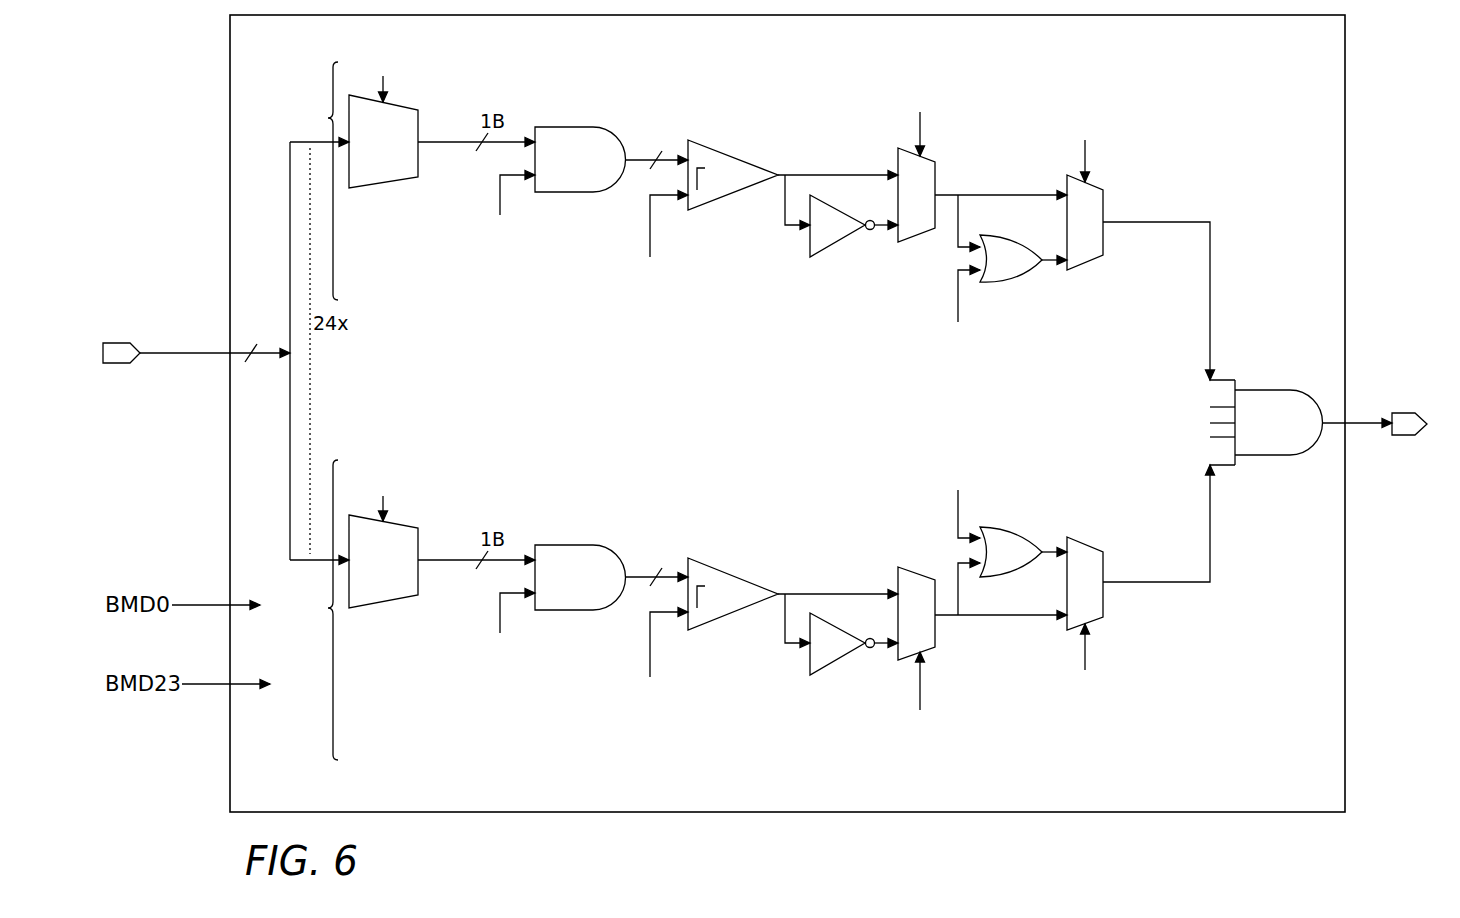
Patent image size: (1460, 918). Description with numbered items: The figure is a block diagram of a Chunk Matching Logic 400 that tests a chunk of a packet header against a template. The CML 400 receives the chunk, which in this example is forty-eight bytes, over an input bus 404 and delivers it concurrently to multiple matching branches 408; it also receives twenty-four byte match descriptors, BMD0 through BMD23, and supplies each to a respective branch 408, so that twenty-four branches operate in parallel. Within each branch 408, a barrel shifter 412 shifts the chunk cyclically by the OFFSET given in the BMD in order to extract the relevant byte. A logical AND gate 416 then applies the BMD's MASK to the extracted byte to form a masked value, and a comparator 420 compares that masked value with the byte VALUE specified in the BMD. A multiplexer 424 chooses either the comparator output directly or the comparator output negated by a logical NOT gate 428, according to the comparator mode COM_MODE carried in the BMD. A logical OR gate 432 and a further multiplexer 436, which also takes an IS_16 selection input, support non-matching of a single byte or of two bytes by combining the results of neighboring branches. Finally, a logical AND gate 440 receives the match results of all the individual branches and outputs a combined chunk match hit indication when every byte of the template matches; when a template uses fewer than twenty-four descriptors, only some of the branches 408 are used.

The Chunk Matching Logic (CML) 400 is at (230, 53).
The input bus 404 is at (185, 351).
The matching branch 408 is at (309, 411).
The barrel shifter 412 is at (391, 188).
The logical AND gate 416 is at (560, 395).
The comparator 420 is at (728, 153).
The multiplexer 424 is at (913, 242).
The logical NOT gate 428 is at (823, 257).
The logical OR gate 432 is at (1013, 284).
The multiplexer 436 is at (1088, 270).
The logical AND gate 440 is at (1268, 388).